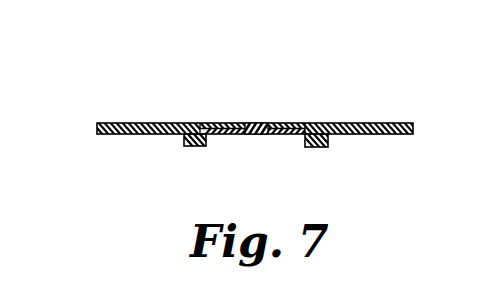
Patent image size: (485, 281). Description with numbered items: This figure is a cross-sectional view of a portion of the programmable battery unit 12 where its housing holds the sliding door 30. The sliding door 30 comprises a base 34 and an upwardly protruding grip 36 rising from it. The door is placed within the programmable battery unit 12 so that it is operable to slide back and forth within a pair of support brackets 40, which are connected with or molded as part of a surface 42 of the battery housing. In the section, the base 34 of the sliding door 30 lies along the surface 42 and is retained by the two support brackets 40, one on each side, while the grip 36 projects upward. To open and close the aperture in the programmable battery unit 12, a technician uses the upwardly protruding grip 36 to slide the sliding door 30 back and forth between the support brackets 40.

The programmable battery unit 12 is at (256, 114).
The sliding door 30 is at (249, 135).
The base 34 is at (220, 135).
The upwardly protruding grip 36 is at (254, 123).
The support brackets 40 is at (189, 147).
The surface 42 is at (372, 123).